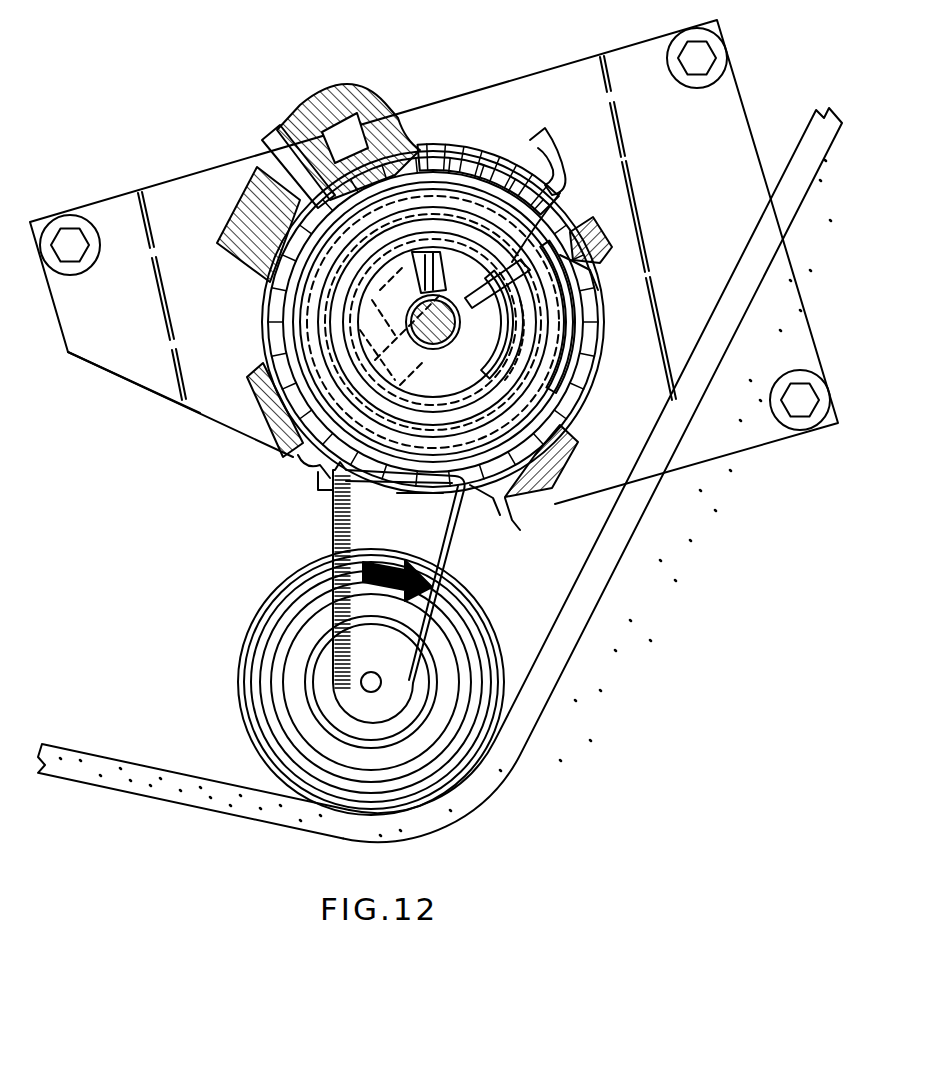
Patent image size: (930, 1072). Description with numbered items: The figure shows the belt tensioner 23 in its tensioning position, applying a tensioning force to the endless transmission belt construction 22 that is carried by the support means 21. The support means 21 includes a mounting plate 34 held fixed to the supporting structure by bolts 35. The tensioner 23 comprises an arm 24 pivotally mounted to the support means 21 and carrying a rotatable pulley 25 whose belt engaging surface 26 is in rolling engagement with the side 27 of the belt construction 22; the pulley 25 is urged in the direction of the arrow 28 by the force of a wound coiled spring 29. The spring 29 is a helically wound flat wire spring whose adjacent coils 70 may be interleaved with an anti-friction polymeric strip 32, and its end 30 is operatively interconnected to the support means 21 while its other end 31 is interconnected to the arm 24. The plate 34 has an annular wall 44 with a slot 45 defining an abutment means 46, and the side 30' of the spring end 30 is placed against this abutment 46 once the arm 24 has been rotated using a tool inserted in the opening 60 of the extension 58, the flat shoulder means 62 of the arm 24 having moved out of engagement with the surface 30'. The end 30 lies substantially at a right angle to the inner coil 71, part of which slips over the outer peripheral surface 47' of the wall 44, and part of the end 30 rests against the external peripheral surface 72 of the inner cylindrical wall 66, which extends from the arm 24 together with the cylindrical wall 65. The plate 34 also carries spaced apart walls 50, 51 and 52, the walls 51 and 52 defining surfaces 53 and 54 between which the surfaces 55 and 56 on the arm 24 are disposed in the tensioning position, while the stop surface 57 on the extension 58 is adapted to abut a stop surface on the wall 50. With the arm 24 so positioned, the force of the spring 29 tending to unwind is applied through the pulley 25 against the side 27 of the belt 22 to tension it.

The support means 21 is at (582, 72).
The endless transmission belt construction 22 is at (632, 530).
The belt tensioner 23 is at (630, 236).
The arm 24 is at (330, 512).
The pulley 25 is at (245, 680).
The belt engaging surface 26 is at (490, 612).
The side of the belt construction 27 is at (130, 720).
The arrow 28 is at (398, 560).
The wound coiled spring 29 is at (310, 322).
The end of the spring 30 is at (540, 239).
The side of the spring end 30' is at (410, 327).
The other end of the spring 31 is at (545, 140).
The anti-friction polymeric strip 32 is at (472, 175).
The mounting plate 34 is at (137, 368).
The bolts 35 is at (705, 55).
The annular wall 44 is at (422, 250).
The slot 45 is at (572, 240).
The abutment means 46 is at (565, 262).
The outer peripheral surface of the wall 47' is at (505, 322).
The wall 50 is at (238, 212).
The wall 51 is at (262, 410).
The wall 52 is at (540, 498).
The surface 53 is at (300, 463).
The surface 54 is at (512, 510).
The surface on the arm 55 is at (318, 482).
The surface on the arm 56 is at (495, 515).
The stop surface 57 is at (270, 137).
The extension 58 is at (320, 103).
The opening 60 is at (372, 125).
The flat shoulder means 62 is at (570, 303).
The cylindrical wall 65 is at (525, 355).
The inner cylindrical wall 66 is at (488, 372).
The coils 70 is at (300, 352).
The inner coil 71 is at (560, 370).
The external peripheral surface 72 is at (358, 305).